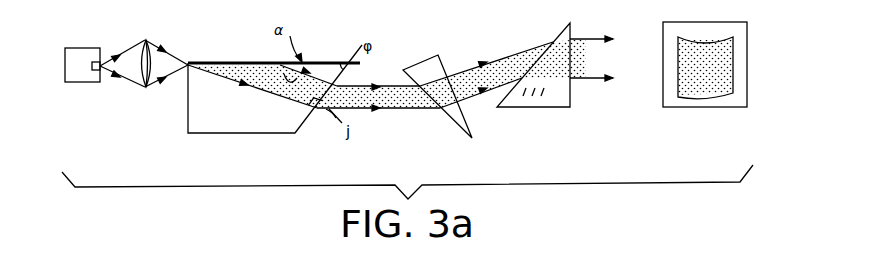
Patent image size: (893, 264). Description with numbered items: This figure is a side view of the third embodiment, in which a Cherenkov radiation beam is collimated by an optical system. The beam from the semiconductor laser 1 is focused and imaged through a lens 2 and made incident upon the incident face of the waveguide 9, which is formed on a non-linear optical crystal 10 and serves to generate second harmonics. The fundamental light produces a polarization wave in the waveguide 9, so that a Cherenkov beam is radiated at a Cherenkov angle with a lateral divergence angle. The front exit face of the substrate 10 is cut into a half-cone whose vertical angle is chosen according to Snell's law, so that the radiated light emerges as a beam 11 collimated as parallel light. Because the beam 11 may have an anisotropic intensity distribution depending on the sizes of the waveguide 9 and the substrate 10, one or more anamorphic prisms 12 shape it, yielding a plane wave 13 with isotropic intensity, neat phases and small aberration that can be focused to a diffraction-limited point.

The semiconductor laser 1 is at (76, 84).
The lens 2 is at (149, 84).
The waveguide 9 is at (245, 62).
The non-linear optical crystal 10 is at (246, 139).
The beam 11 is at (400, 92).
The anamorphic prisms 12 is at (577, 111).
The plane wave 13 is at (683, 92).